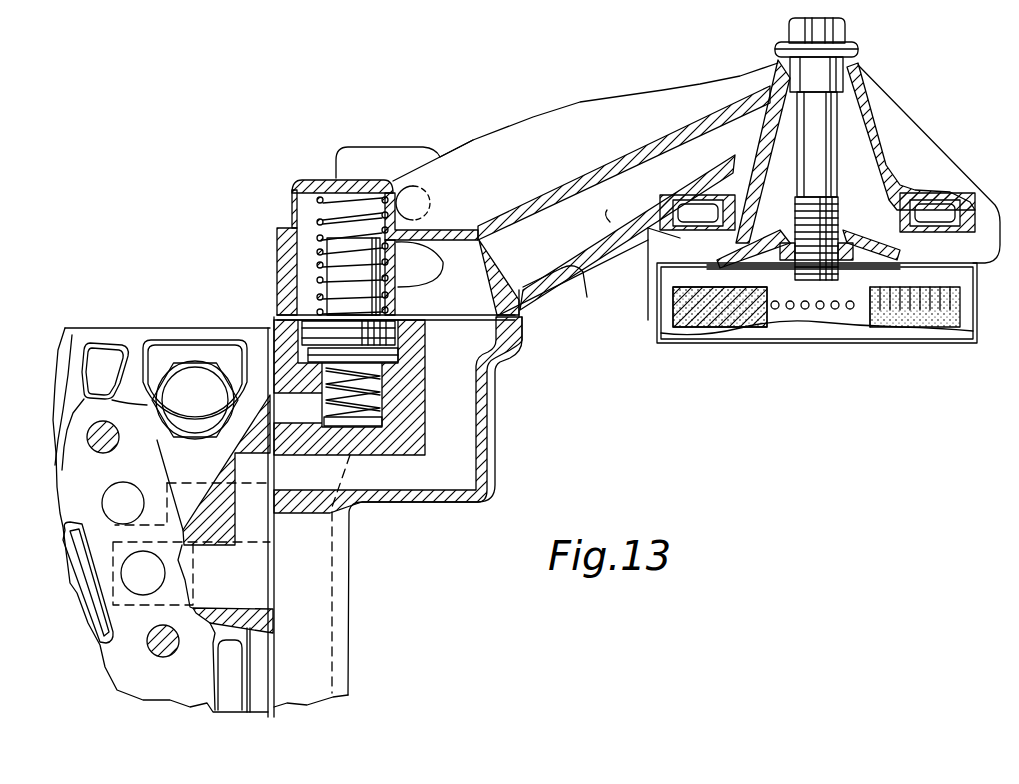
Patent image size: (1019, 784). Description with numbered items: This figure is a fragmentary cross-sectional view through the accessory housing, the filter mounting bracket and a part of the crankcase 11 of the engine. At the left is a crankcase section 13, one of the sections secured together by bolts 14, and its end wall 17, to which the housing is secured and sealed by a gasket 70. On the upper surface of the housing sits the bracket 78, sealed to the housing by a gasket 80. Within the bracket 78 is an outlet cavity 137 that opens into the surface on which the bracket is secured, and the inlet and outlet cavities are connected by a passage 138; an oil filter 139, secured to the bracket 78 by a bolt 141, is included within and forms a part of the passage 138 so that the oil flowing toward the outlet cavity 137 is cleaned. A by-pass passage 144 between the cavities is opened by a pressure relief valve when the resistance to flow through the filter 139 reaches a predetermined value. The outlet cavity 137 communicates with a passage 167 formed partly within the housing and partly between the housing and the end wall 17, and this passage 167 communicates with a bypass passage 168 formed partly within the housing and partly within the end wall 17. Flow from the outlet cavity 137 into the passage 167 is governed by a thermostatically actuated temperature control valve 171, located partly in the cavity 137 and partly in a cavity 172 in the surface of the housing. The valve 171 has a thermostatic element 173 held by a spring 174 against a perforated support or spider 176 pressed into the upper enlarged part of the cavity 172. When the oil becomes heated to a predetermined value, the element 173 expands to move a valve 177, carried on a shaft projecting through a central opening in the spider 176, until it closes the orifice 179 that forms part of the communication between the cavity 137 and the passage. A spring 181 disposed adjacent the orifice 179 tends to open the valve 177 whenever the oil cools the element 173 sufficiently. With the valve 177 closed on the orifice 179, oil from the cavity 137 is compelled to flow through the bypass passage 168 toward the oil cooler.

The crankcase 11 is at (98, 327).
The crankcase section 13 is at (60, 507).
The bolts 14 is at (182, 380).
The end wall 17 is at (233, 522).
The gasket 70 is at (274, 611).
The bracket 78 is at (292, 195).
The gasket 80 is at (490, 307).
The outlet cavity 137 is at (519, 318).
The passage 138 is at (612, 222).
The oil filter 139 is at (657, 343).
The bolt 141 is at (845, 35).
The by-pass passage 144 is at (437, 250).
The passage 167 is at (333, 643).
The bypass passage 168 is at (476, 418).
The temperature control valve 171 is at (330, 247).
The cavity 172 is at (439, 297).
The thermostatic element 173 is at (327, 293).
The spring 174 is at (323, 281).
The perforated support 176 is at (283, 325).
The valve 177 is at (402, 338).
The orifice 179 is at (382, 377).
The spring 181 is at (385, 406).